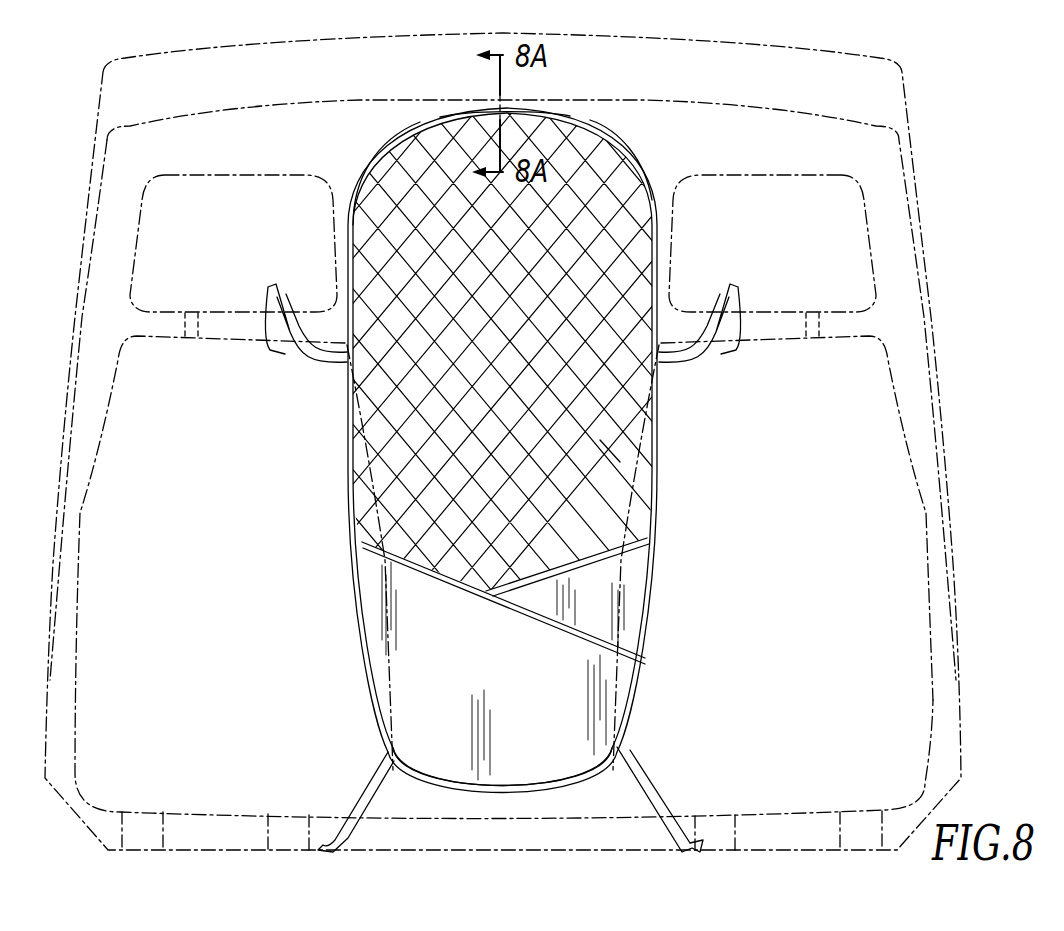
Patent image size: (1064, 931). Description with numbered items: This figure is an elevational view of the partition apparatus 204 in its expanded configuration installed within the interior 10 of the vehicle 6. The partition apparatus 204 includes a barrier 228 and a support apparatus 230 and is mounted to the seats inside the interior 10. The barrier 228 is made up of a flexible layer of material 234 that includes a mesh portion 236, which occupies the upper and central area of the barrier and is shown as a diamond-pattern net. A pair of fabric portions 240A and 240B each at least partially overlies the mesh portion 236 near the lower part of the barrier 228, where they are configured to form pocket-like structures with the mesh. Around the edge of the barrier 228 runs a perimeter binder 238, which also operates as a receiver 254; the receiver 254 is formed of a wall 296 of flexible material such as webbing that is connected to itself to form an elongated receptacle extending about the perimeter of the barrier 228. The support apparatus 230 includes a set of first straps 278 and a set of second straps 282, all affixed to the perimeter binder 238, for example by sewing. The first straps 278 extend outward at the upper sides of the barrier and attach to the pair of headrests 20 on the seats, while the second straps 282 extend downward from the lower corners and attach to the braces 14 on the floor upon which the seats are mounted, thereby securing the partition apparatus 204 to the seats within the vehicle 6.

The interior 10 is at (148, 138).
The vehicle 6 is at (6, 197).
The braces 14 is at (268, 835).
The headrests 20 is at (128, 325).
The partition apparatus 204 is at (654, 156).
The barrier 228 is at (608, 458).
The support apparatus 230 is at (636, 682).
The layer of material 234 is at (635, 231).
The mesh portion 236 is at (655, 253).
The perimeter binder 238 is at (586, 134).
The fabric portion 240A is at (433, 744).
The fabric portion 240B is at (632, 570).
The receiver 254 is at (617, 141).
The first straps 278 is at (293, 362).
The second straps 282 is at (334, 837).
The wall 296 is at (392, 140).